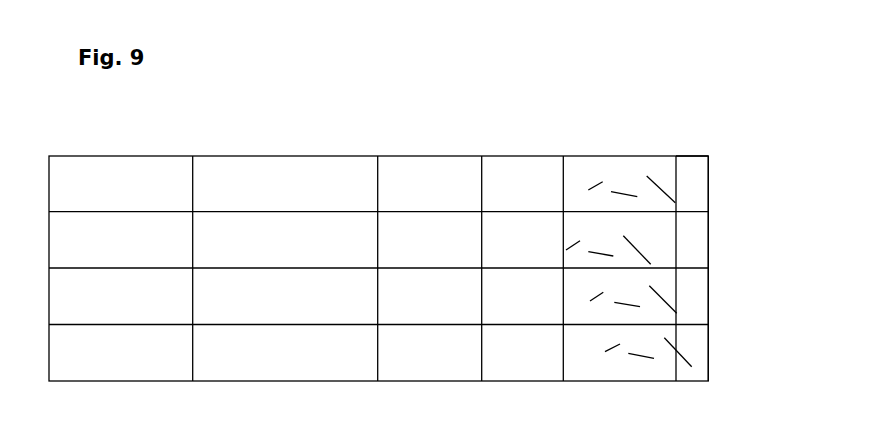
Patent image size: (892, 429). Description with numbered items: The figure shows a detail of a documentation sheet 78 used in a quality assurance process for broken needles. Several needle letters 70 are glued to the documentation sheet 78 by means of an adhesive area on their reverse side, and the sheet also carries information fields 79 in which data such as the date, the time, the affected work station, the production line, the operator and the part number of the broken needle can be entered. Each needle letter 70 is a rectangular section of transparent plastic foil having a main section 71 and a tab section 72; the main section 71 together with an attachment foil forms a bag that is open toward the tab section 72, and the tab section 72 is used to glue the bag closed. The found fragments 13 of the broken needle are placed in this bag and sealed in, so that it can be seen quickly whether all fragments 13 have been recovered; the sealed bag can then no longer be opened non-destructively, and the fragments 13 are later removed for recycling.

The documentation sheet 78 is at (302, 132).
The information fields 79 is at (274, 237).
The needle letter 70 is at (637, 136).
The tab section 72 is at (698, 250).
The fragments 13 is at (595, 185).
The main section 71 is at (657, 312).